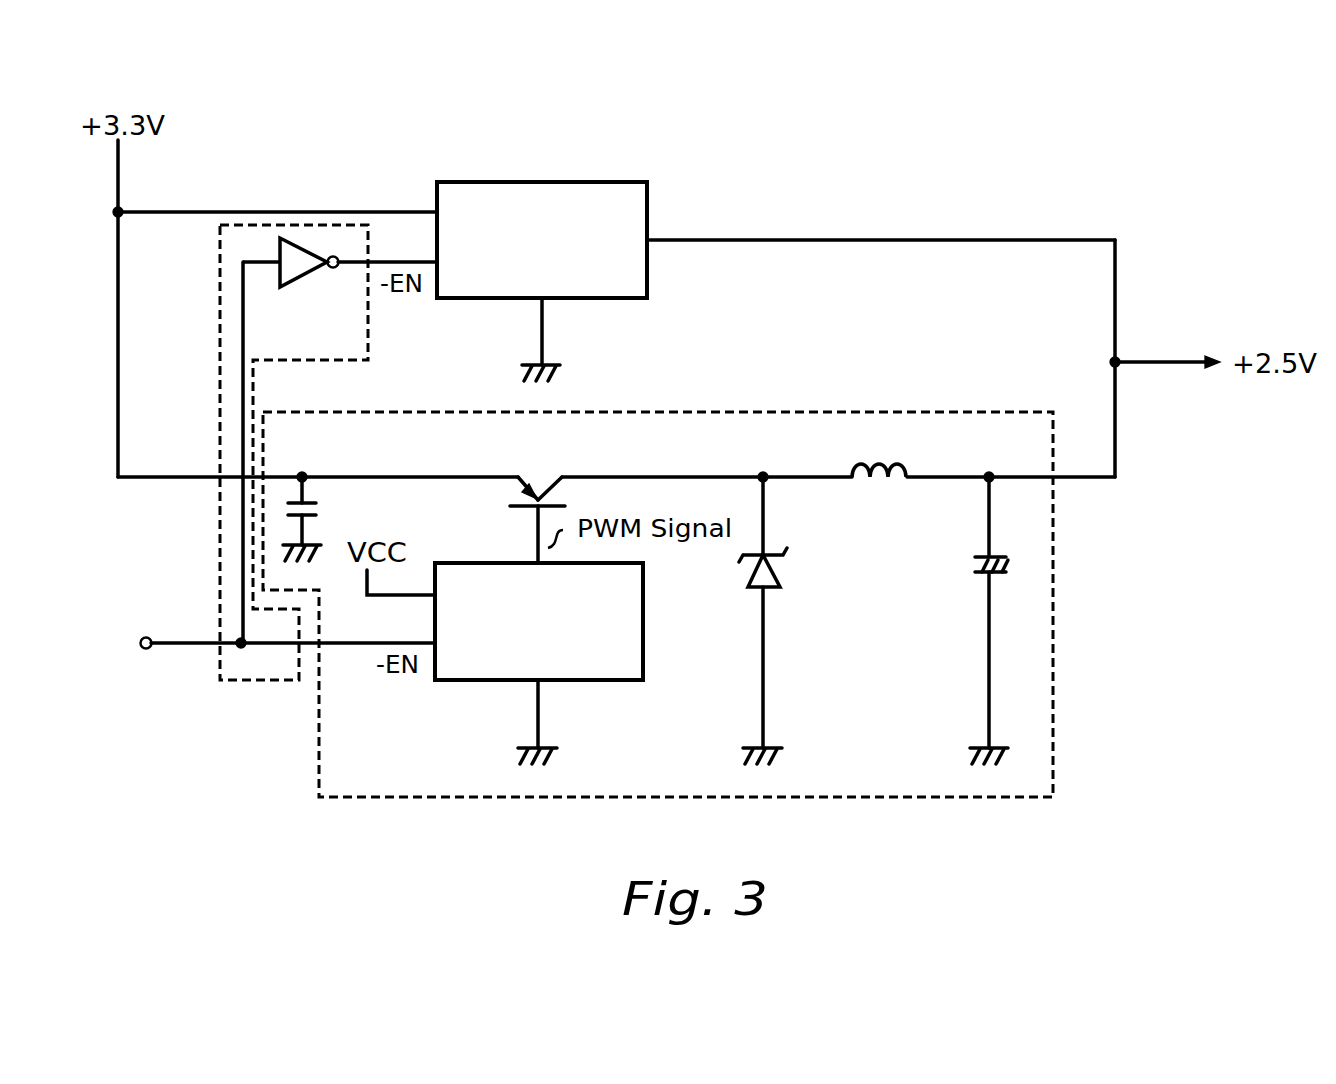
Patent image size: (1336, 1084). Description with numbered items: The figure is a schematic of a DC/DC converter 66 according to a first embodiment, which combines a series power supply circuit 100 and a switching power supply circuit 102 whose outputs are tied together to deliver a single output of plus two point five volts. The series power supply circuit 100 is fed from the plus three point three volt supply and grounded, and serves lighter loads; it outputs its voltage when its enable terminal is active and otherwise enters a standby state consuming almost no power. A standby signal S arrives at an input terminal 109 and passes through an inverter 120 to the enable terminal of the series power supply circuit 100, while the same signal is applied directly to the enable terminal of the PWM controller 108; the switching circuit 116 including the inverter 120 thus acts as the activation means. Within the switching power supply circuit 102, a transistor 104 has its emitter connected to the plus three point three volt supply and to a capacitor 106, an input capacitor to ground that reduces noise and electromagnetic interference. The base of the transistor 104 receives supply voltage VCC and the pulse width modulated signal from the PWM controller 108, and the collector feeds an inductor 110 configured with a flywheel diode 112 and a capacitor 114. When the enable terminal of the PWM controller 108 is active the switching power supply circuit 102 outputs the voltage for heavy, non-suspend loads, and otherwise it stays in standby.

The DC/DC converter 66 is at (832, 144).
The series power supply circuit 100 is at (596, 182).
The switching power supply circuit 102 is at (988, 410).
The transistor 104 is at (545, 477).
The capacitor 106 is at (320, 511).
The PWM controller 108 is at (644, 625).
The input terminal 109 is at (142, 638).
The inductor 110 is at (897, 490).
The flywheel diode 112 is at (790, 572).
The capacitor 114 is at (962, 578).
The switching circuit 116 is at (234, 683).
The inverter 120 is at (300, 288).